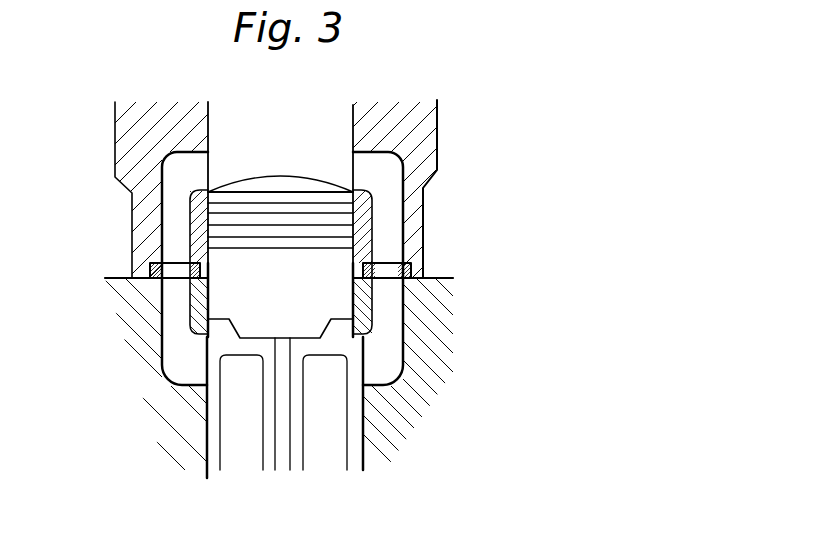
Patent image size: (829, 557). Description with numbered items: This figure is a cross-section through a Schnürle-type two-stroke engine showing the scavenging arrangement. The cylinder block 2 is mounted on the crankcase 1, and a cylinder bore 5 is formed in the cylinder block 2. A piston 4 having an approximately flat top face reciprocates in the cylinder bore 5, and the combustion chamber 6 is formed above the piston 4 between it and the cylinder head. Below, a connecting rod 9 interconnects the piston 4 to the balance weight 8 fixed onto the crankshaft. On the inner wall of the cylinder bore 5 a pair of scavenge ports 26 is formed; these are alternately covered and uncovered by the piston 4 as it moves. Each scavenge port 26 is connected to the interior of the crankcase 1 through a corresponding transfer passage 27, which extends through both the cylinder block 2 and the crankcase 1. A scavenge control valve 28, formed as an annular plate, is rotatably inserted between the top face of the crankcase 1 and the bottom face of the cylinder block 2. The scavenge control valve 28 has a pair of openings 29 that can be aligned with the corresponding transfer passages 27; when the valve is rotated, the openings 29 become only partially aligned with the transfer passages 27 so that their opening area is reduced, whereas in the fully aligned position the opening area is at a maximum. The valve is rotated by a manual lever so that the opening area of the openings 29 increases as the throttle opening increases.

The crankcase 1 is at (433, 346).
The cylinder block 2 is at (438, 145).
The piston 4 is at (330, 303).
The cylinder bore 5 is at (209, 103).
The combustion chamber 6 is at (290, 118).
The balance weight 8 is at (246, 450).
The connecting rod 9 is at (285, 455).
The scavenge ports 26 is at (232, 160).
The transfer passages 27 is at (177, 231).
The scavenge control valve 28 is at (406, 262).
The openings 29 is at (165, 278).